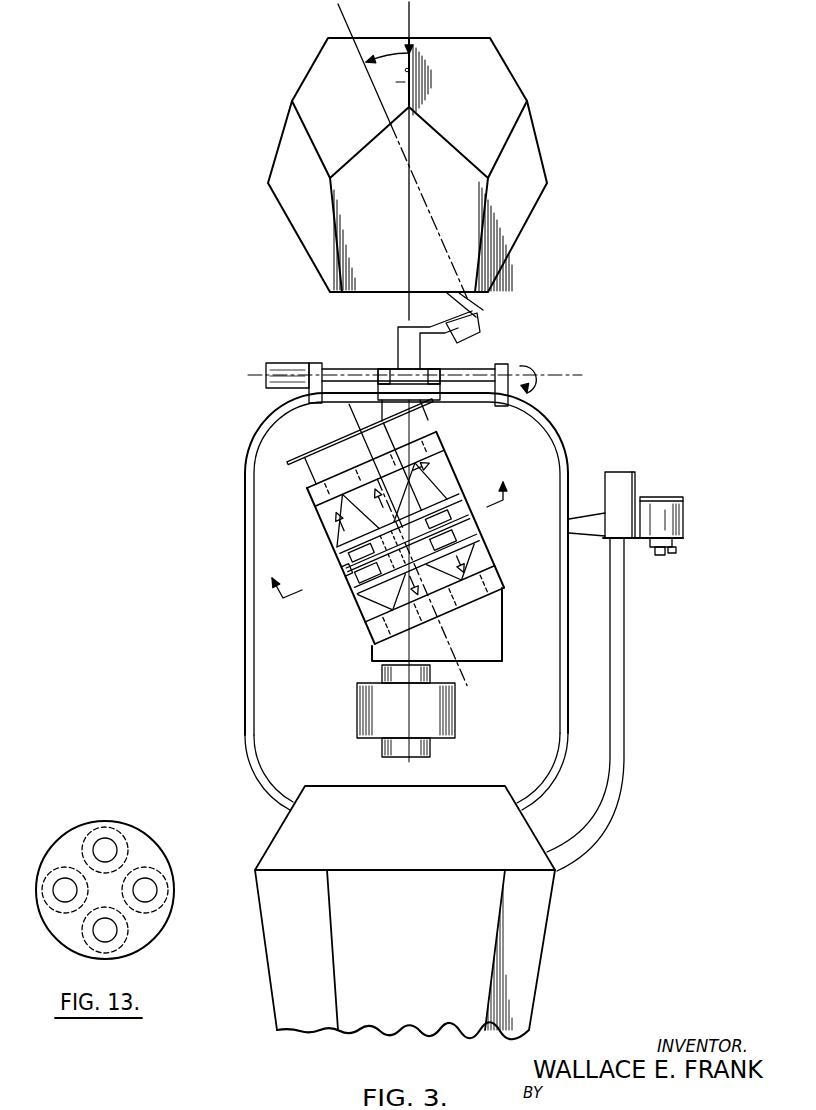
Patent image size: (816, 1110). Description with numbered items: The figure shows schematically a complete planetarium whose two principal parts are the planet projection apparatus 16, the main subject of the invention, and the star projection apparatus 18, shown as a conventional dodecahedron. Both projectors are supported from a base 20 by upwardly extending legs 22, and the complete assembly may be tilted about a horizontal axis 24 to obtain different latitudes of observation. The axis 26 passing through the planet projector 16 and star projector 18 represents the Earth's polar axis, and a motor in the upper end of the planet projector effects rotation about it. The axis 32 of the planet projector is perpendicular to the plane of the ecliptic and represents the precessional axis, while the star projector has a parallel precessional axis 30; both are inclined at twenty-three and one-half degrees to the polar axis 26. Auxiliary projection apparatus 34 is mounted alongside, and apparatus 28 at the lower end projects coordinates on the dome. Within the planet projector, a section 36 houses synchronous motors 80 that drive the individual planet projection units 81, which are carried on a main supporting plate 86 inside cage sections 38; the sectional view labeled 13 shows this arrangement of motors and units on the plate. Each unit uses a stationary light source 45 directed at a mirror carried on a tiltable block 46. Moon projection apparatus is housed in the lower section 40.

In FIG. 3, the star projection apparatus 18 is at (612, 80).
In FIG. 3, the precessional axis 30 is at (381, 118).
In FIG. 3, the axis 26 is at (409, 212).
In FIG. 3, the axis 24 is at (350, 374).
In FIG. 3, the legs 22 is at (253, 527).
In FIG. 3, the axis 32 is at (347, 441).
In FIG. 3, the cage sections 38 is at (326, 529).
In FIG. 3, the light source 45 is at (428, 438).
In FIG. 3, the block 46 is at (436, 457).
In FIG. 3, the lower section 40 is at (495, 637).
In FIG. 3, the main supporting plate 86 is at (450, 500).
In FIG. 13, the main supporting plate 86 is at (152, 856).
In FIG. 3, the synchronous motors 80 is at (460, 521).
In FIG. 13, the synchronous motors 80 is at (99, 844).
In FIG. 3, the planet projection units 81 is at (447, 493).
In FIG. 13, the planet projection units 81 is at (119, 833).
In FIG. 3, the section 36 is at (342, 576).
In FIG. 3, the planet projection apparatus 16 is at (486, 468).
In FIG. 3, the section line 13 is at (394, 529).
In FIG. 3, the apparatus for projecting coordinates 28 is at (457, 718).
In FIG. 3, the auxiliary projection apparatus 34 is at (690, 474).
In FIG. 3, the base 20 is at (536, 948).